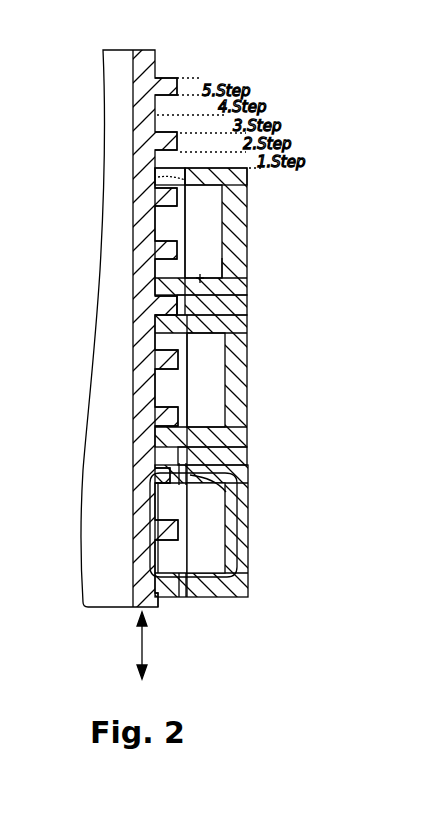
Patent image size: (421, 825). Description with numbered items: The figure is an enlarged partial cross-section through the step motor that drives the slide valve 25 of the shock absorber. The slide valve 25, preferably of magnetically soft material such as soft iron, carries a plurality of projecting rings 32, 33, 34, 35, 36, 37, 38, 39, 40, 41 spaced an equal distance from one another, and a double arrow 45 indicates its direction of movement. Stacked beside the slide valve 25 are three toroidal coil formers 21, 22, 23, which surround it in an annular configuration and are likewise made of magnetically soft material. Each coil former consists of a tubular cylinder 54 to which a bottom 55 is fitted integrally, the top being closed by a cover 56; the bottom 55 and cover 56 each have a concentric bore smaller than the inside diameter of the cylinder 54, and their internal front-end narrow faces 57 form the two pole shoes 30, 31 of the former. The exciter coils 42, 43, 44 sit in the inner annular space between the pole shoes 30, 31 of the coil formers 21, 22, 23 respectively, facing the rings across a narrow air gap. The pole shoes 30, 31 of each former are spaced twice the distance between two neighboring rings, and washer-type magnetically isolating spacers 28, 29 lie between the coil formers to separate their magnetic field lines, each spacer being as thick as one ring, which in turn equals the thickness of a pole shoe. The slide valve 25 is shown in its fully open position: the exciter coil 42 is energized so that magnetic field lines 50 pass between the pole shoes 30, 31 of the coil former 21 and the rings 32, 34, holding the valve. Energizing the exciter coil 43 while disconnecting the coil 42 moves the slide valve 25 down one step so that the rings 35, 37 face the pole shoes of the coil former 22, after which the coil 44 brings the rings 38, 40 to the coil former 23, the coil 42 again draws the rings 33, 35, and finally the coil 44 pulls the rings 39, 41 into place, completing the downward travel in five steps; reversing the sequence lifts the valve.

The slide valve 25 is at (118, 66).
The ring 41 is at (167, 88).
The ring 40 is at (167, 142).
The internal front-end narrow face 57 is at (155, 175).
The ring 39 is at (167, 197).
The ring 38 is at (167, 250).
The ring 37 is at (165, 305).
The ring 36 is at (165, 362).
The ring 35 is at (165, 415).
The ring 34 is at (167, 472).
The ring 33 is at (167, 530).
The ring 32 is at (168, 585).
The double arrow indicating direction of movement 45 is at (140, 650).
The pole shoe 30 is at (190, 597).
The cover 56 is at (245, 180).
The coil former 23 is at (237, 229).
The exciter coil 44 is at (203, 231).
The bottom 55 is at (203, 270).
The tubular cylinder 54 is at (243, 268).
The magnetically isolating spacer 29 is at (235, 305).
The exciter coil 43 is at (206, 380).
The coil former 22 is at (240, 396).
The magnetically isolating spacer 28 is at (240, 447).
The pole shoe 31 is at (228, 492).
The coil former 21 is at (240, 525).
The exciter coil 42 is at (206, 528).
The magnetic field line 50 is at (237, 553).